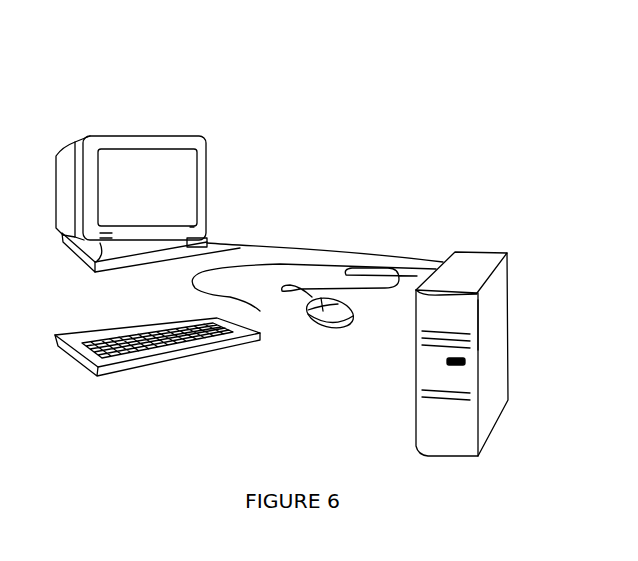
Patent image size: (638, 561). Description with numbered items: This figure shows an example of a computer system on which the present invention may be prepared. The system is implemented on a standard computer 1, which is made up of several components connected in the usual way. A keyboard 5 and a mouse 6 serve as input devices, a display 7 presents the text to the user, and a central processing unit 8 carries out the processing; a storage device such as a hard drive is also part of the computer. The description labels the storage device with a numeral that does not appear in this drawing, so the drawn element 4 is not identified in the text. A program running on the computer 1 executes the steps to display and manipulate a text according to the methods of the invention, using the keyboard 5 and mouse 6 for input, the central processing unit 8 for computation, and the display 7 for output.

The standard computer 1 is at (302, 160).
The storage device / hard disk drive 4 is at (473, 336).
The keyboard 5 is at (118, 327).
The mouse 6 is at (328, 329).
The display 7 is at (153, 172).
The central processing unit 8 is at (480, 250).